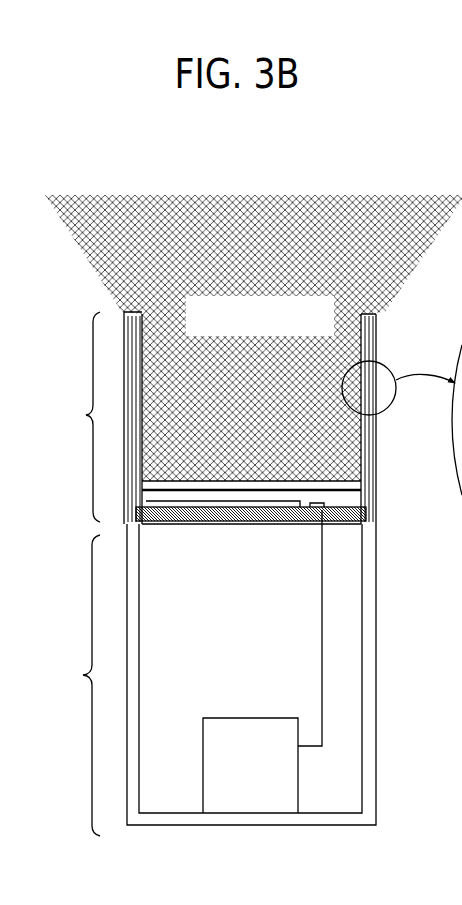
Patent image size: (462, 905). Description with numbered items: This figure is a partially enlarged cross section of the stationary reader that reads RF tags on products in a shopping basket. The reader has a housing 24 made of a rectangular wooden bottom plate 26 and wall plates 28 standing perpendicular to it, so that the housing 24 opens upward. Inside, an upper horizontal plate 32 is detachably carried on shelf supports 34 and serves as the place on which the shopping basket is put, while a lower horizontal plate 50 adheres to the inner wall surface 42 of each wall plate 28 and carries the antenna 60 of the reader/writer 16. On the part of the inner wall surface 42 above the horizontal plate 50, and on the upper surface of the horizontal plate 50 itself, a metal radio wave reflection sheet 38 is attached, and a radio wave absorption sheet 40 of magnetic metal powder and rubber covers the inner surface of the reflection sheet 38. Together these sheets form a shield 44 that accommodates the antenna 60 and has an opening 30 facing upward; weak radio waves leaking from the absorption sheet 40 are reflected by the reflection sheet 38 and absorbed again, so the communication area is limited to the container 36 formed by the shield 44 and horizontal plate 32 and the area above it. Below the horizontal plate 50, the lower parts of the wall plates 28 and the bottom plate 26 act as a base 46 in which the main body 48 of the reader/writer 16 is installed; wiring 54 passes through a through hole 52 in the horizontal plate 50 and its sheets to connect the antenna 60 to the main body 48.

The reader/writer 16 is at (256, 572).
The housing 24 is at (382, 780).
The bottom plate 26 is at (162, 812).
The wall plate 28 is at (368, 312).
The opening 30 is at (334, 300).
The horizontal plate 32 is at (186, 500).
The shelf support 34 is at (150, 526).
The container 36 is at (80, 417).
The radio wave reflection sheet 38 is at (125, 345).
The radio wave absorption sheet 40 is at (143, 350).
The inner wall surface 42 is at (375, 416).
The shield 44 is at (135, 530).
The base 46 is at (78, 685).
The main body 48 is at (245, 718).
The horizontal plate 50 is at (280, 520).
The through hole 52 is at (323, 512).
The wiring 54 is at (324, 600).
The antenna 60 is at (252, 505).